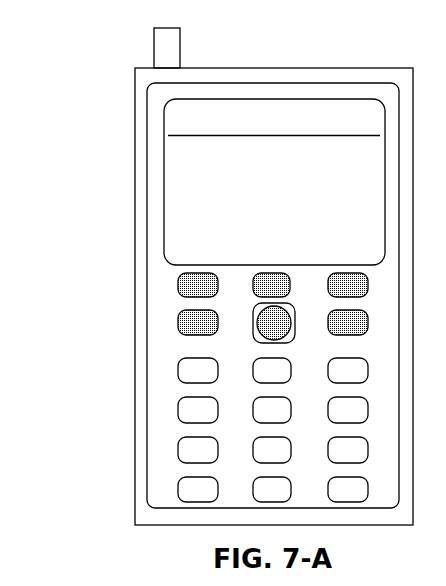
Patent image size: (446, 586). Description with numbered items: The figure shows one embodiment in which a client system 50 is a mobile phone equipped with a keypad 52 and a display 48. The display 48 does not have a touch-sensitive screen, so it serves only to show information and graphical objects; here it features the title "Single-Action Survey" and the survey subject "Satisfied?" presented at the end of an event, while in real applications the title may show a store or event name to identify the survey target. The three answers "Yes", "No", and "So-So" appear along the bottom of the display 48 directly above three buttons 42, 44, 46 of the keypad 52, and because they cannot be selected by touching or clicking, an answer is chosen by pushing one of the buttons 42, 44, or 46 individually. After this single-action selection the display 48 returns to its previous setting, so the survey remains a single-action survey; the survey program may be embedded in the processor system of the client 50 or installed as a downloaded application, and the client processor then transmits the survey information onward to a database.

The client system 50 is at (112, 72).
The display 48 is at (172, 210).
The keypad 52 is at (178, 450).
The button 42 is at (184, 285).
The button 44 is at (258, 285).
The button 46 is at (361, 285).